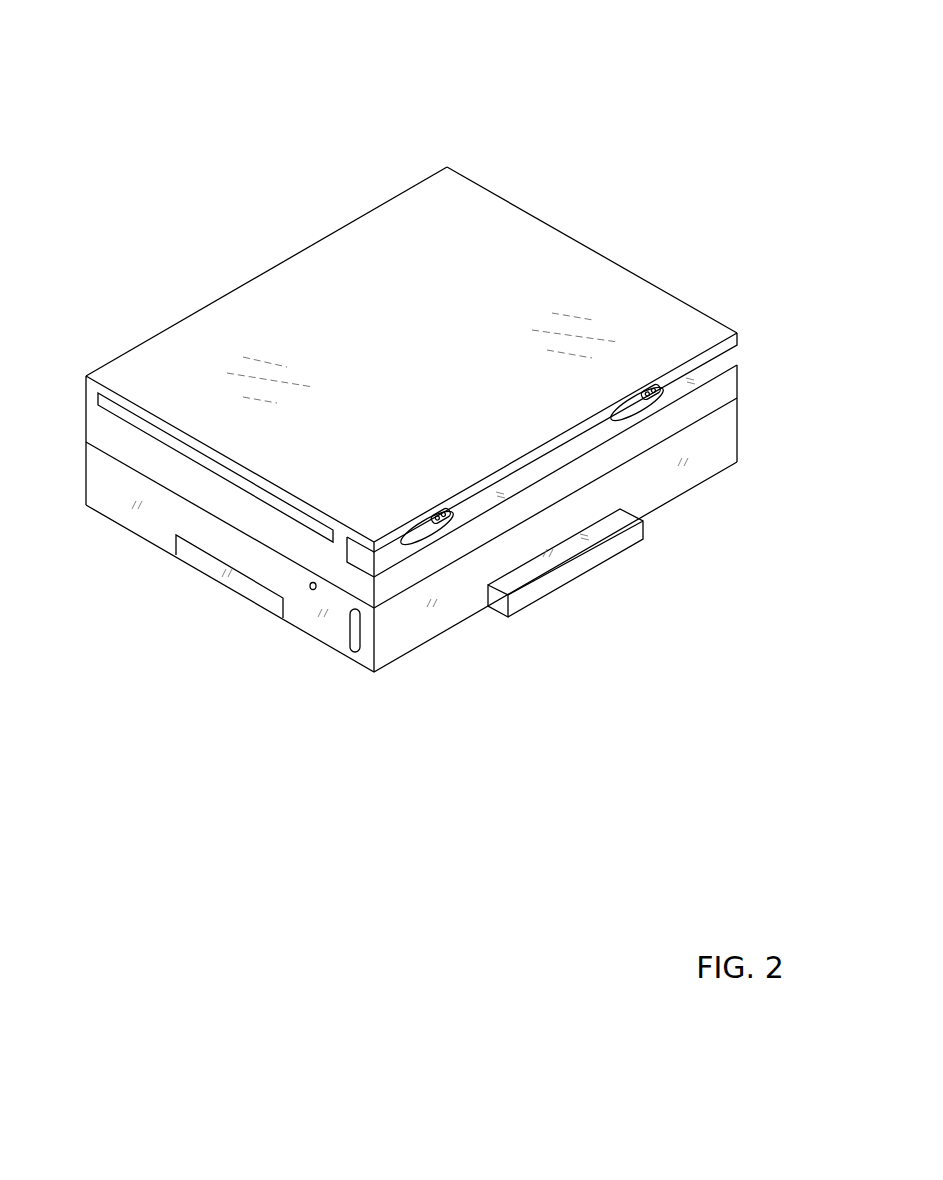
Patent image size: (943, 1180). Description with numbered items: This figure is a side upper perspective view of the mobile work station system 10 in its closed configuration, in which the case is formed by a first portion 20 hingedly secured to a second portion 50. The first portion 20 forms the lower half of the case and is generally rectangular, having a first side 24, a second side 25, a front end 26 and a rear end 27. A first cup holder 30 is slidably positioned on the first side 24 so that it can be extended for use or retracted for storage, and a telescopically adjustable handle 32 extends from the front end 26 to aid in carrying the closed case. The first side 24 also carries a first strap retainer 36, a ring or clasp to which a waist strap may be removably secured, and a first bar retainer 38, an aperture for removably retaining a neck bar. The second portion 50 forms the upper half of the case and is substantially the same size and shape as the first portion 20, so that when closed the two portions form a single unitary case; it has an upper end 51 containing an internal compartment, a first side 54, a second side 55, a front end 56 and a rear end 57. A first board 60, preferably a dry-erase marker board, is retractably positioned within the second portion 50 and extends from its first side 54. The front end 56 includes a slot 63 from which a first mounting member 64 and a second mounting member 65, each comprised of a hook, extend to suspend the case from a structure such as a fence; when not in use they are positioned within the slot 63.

The mobile work station system 10 is at (232, 85).
The first portion 20 is at (471, 620).
The first side 24 is at (212, 538).
The second side 25 is at (737, 424).
The front end 26 is at (398, 640).
The rear end 27 is at (83, 478).
The first cup holder 30 is at (243, 583).
The handle 32 is at (575, 568).
The first strap retainer 36 is at (347, 640).
The first bar retainer 38 is at (313, 590).
The second portion 50 is at (506, 256).
The upper end 51 is at (407, 240).
The first side 54 is at (170, 432).
The second side 55 is at (603, 255).
The front end 56 is at (668, 483).
The rear end 57 is at (298, 248).
The first board 60 is at (188, 452).
The slot 63 is at (677, 390).
The first mounting member 64 is at (436, 532).
The second mounting member 65 is at (634, 418).